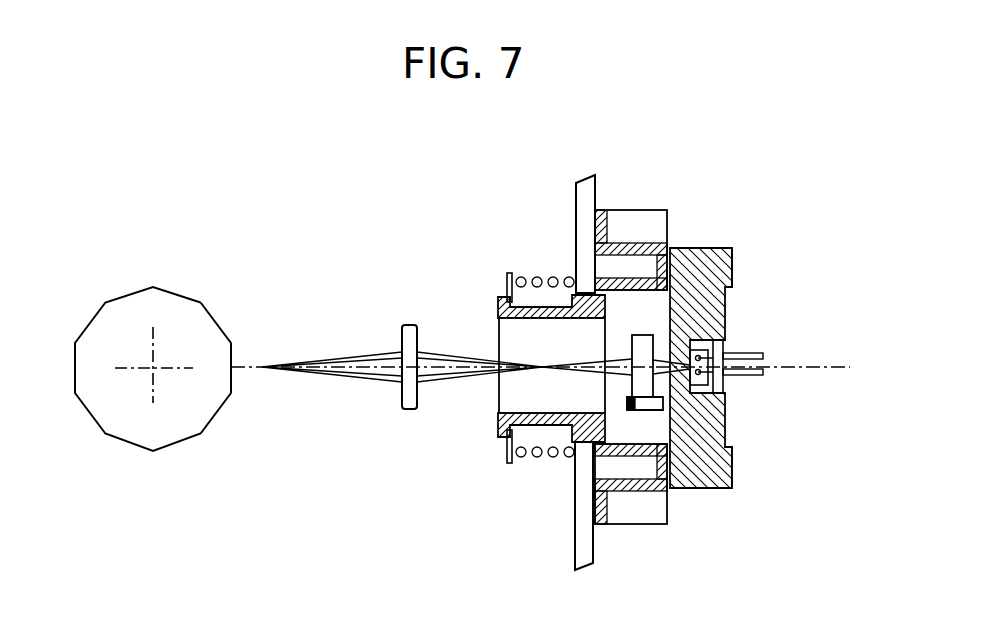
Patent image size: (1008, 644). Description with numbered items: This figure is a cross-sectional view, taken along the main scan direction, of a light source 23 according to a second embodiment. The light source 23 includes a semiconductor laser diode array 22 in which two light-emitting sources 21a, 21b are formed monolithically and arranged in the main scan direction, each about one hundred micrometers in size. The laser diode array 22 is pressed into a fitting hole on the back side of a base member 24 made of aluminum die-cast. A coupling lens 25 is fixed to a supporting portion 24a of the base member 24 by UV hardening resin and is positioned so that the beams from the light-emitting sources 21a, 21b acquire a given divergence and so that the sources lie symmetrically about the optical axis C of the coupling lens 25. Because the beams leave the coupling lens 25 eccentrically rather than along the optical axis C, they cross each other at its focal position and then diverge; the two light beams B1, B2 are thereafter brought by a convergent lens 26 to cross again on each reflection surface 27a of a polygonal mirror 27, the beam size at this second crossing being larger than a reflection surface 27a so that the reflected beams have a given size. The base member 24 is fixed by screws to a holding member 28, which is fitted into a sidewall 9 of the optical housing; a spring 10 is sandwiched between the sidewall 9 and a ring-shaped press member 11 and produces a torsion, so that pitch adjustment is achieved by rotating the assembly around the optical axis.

The sidewall 9 is at (585, 200).
The spring 10 is at (538, 462).
The ring-shaped press member 11 is at (506, 276).
The light-emitting source 21a is at (727, 281).
The light-emitting source 21b is at (718, 488).
The semiconductor laser diode array 22 is at (723, 343).
The light source 23 is at (741, 420).
The base member 24 is at (698, 247).
The supporting portion 24a is at (645, 408).
The coupling lens 25 is at (642, 343).
The convergent lens 26 is at (407, 410).
The polygonal mirror 27 is at (130, 306).
The reflection surface 27a is at (216, 322).
The holding member 28 is at (522, 413).
The light beam B1 is at (340, 380).
The light beam B2 is at (345, 357).
The optical axis C is at (467, 366).